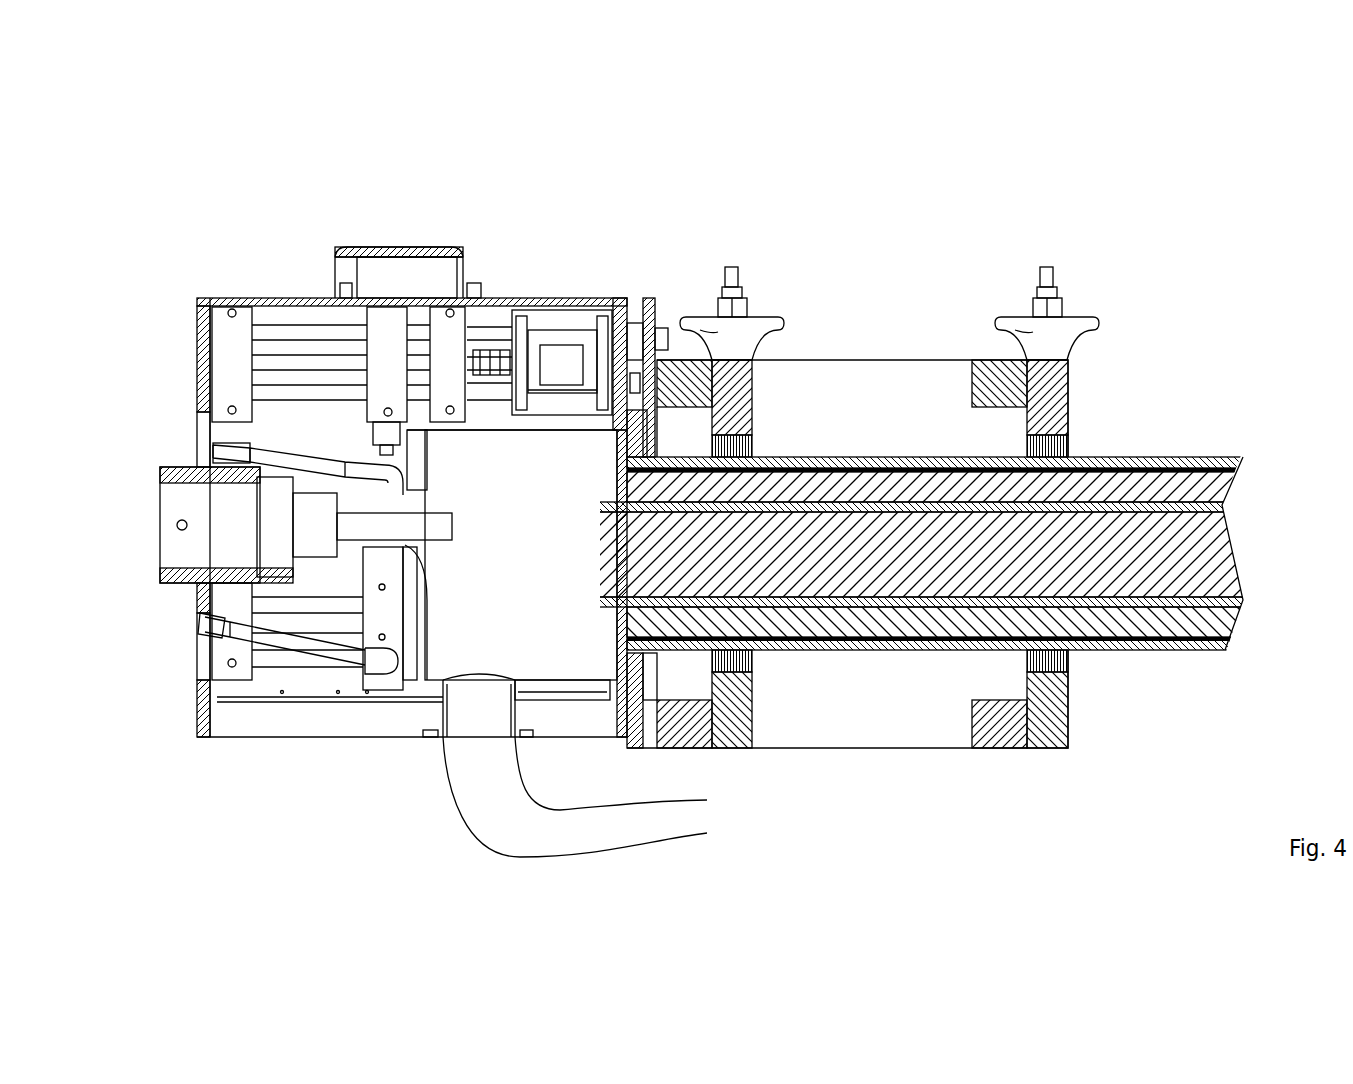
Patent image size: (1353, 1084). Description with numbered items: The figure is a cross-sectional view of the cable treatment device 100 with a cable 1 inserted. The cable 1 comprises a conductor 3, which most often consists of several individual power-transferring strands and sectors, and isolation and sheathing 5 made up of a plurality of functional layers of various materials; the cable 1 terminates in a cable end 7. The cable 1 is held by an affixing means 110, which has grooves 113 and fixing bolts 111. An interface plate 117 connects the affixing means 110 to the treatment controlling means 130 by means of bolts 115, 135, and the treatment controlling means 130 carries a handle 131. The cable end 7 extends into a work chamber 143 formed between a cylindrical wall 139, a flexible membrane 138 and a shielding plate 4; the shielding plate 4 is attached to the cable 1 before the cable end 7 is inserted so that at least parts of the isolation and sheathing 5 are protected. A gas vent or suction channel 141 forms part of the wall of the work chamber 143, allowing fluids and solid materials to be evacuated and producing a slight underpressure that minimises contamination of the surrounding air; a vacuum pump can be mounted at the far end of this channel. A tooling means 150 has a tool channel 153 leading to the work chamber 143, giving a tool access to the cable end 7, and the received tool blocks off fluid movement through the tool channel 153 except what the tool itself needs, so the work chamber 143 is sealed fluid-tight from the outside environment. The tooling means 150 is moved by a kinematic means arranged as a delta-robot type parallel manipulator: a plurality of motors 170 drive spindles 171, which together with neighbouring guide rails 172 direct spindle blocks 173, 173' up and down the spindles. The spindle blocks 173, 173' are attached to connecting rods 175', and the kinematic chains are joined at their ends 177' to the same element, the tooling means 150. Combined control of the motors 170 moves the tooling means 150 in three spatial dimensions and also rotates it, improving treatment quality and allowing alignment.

The cable 1 is at (1211, 404).
The conductor 3 is at (1205, 553).
The shielding plate 4 is at (640, 688).
The isolation and sheathing 5 is at (1183, 620).
The cable end 7 is at (490, 550).
The drive unit 100 is at (992, 252).
The affixing means 110 is at (913, 748).
The fixing bolts 111 is at (1063, 320).
The grooves 113 is at (1053, 673).
The bolts 115 is at (657, 378).
The interface plate 117 is at (633, 710).
The treatment controlling means 130 is at (345, 330).
The handle 131 is at (377, 298).
The bolts 135 is at (637, 377).
The flexible membrane 138 is at (377, 470).
The cylindrical wall 139 is at (513, 427).
The gas vent or suction channel 141 is at (495, 757).
The work chamber 143 is at (557, 457).
The tooling means 150 is at (167, 513).
The tool channel 153 is at (262, 478).
The motors 170 is at (563, 360).
The spindle 171 is at (388, 357).
The guide rail 172 is at (370, 527).
The spindle block 173 is at (388, 268).
The spindle block 173' is at (330, 702).
The connecting rod 175' is at (296, 717).
The end of kinematic chain 177' is at (141, 693).